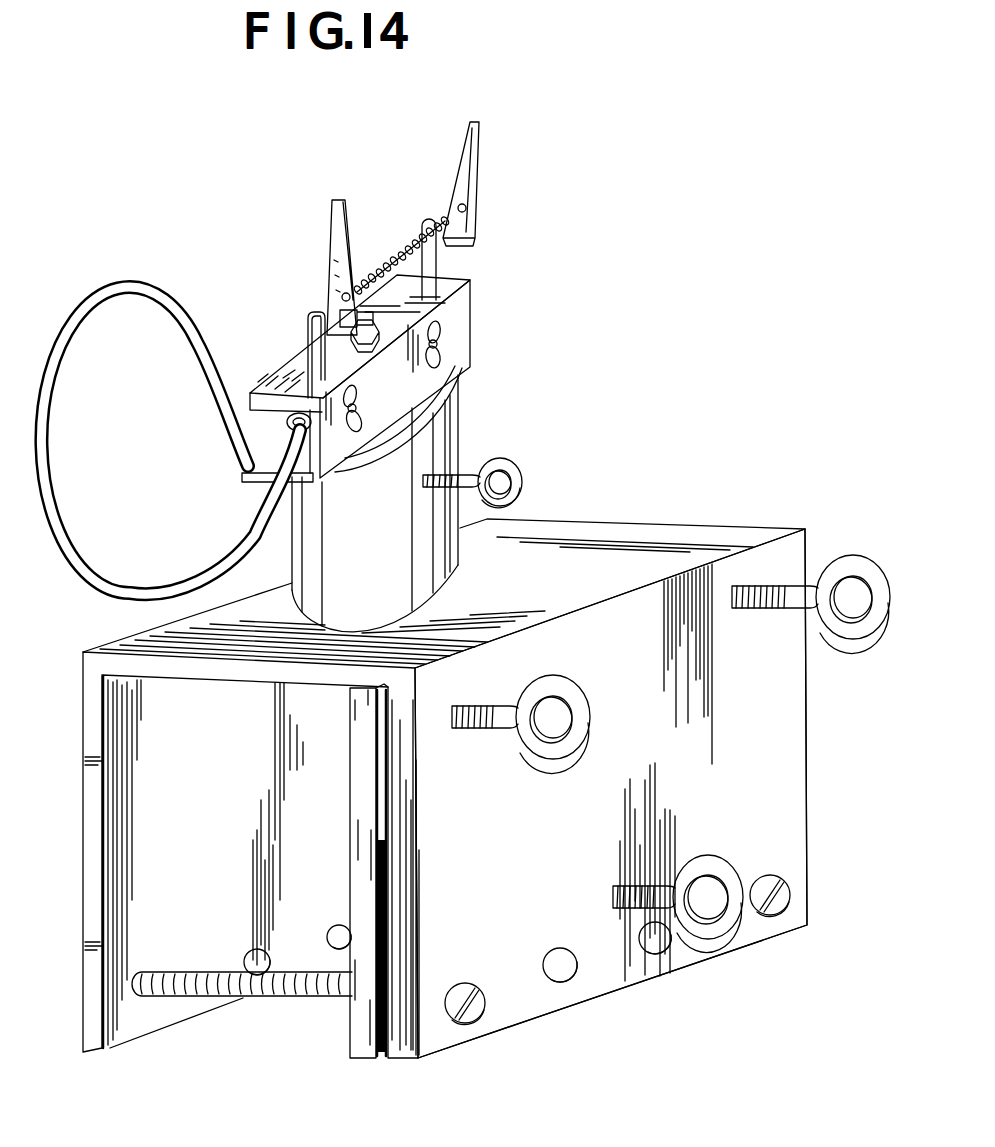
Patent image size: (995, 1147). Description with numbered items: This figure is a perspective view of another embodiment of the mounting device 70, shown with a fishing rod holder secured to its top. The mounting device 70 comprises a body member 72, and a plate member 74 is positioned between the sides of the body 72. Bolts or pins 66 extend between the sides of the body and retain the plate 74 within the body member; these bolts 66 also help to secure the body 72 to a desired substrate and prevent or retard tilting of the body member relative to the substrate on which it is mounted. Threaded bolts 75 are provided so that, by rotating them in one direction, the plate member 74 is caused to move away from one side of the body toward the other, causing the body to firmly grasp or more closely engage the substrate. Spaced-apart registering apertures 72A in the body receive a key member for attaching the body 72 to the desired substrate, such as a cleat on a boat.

The mounting device 70 is at (725, 522).
The body member 72 is at (780, 782).
The registering apertures 72A is at (651, 956).
The plate member 74 is at (358, 1027).
The threaded bolts 75 is at (812, 586).
The bolts or pins 66 is at (463, 985).